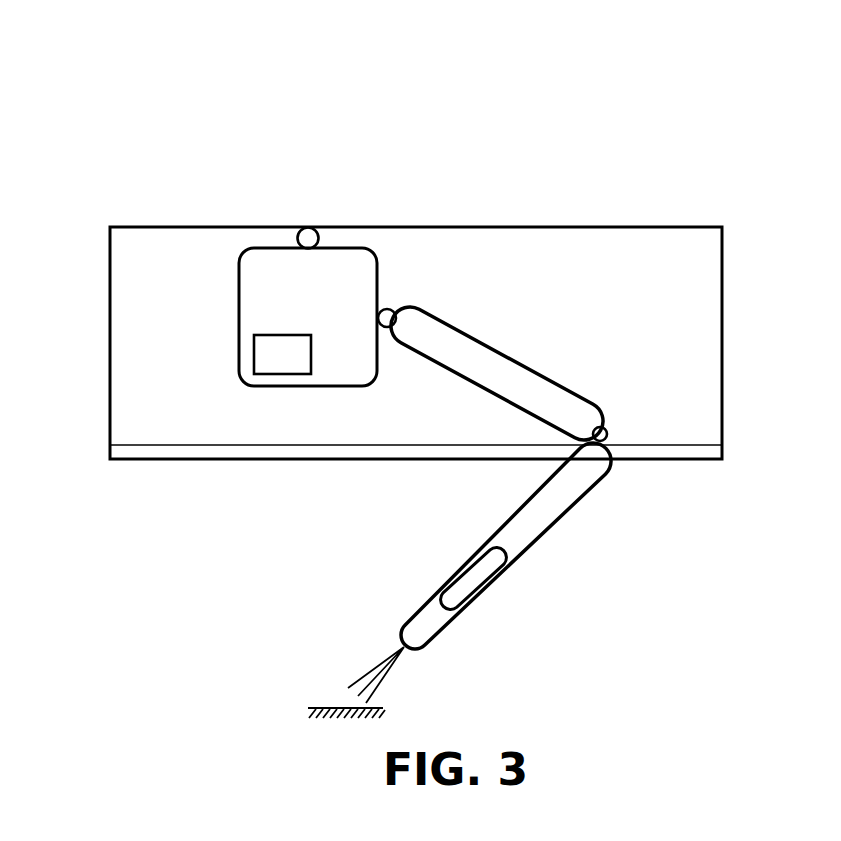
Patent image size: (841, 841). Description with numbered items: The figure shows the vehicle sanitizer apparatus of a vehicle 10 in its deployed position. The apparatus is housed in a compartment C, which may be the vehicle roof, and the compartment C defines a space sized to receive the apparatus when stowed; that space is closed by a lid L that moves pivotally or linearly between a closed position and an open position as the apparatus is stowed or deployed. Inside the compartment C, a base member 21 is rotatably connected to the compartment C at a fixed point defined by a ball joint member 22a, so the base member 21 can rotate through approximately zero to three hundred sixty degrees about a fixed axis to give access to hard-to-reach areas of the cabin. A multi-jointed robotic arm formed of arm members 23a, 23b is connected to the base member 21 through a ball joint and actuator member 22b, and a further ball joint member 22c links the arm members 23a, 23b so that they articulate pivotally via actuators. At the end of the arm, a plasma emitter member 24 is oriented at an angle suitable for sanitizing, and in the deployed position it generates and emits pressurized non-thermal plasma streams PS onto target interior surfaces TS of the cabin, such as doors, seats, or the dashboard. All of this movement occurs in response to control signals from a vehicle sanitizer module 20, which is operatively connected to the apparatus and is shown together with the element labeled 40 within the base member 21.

The vehicle 10 is at (244, 95).
The vehicle sanitizer module 20 is at (166, 289).
The base member 21 is at (239, 314).
The ball joint member 22a is at (315, 229).
The ball joint and actuator member 22b is at (392, 311).
The ball joint member 22c is at (606, 429).
The arm member 23a is at (512, 354).
The arm member 23b is at (543, 543).
The plasma emitter member 24 is at (440, 630).
The controller 40 is at (252, 372).
The compartment C is at (679, 227).
The lid L is at (137, 450).
The plasma streams PS is at (368, 672).
The target interior surfaces TS is at (312, 708).